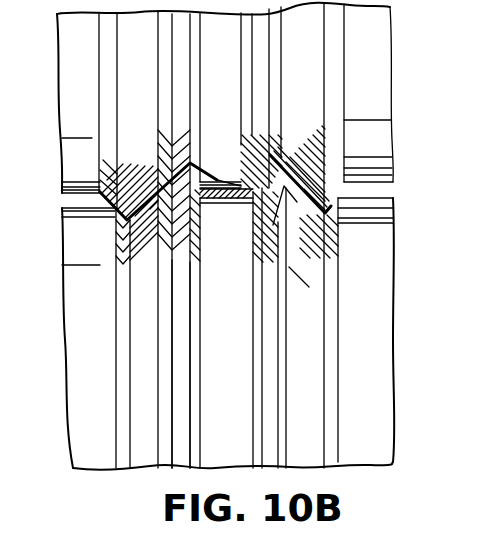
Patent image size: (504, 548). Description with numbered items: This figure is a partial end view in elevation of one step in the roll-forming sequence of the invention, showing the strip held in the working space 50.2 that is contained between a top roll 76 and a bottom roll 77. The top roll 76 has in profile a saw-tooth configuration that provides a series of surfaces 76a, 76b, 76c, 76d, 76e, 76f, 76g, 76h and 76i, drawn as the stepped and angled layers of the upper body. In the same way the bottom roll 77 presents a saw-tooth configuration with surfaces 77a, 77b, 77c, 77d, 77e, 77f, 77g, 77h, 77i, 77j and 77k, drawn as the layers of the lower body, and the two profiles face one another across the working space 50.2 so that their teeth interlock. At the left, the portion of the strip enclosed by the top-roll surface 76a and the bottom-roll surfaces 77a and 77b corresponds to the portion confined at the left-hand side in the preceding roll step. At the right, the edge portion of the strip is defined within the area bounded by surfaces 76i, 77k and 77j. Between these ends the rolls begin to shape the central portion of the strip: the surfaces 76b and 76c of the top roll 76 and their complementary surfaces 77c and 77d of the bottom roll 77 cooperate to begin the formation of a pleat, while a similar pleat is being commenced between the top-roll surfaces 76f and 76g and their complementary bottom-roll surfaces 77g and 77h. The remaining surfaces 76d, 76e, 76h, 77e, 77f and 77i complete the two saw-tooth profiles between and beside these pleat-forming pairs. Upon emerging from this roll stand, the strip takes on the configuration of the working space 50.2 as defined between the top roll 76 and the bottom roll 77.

The top roll 76 is at (232, 96).
The surface 76a is at (127, 77).
The surface 76b is at (166, 30).
The surface 76c is at (180, 50).
The surface 76d is at (195, 97).
The surface 76e is at (212, 122).
The surface 76f is at (250, 30).
The surface 76g is at (259, 58).
The surface 76h is at (275, 53).
The surface 76i is at (299, 80).
The working space 50.2 is at (214, 177).
The bottom roll 77 is at (237, 389).
The surface 77a is at (105, 238).
The surface 77b is at (146, 215).
The surface 77c is at (163, 303).
The surface 77d is at (182, 270).
The surface 77e is at (195, 303).
The surface 77f is at (225, 207).
The surface 77g is at (259, 257).
The surface 77h is at (269, 292).
The surface 77i is at (284, 338).
The surface 77j is at (307, 380).
The surface 77k is at (323, 213).